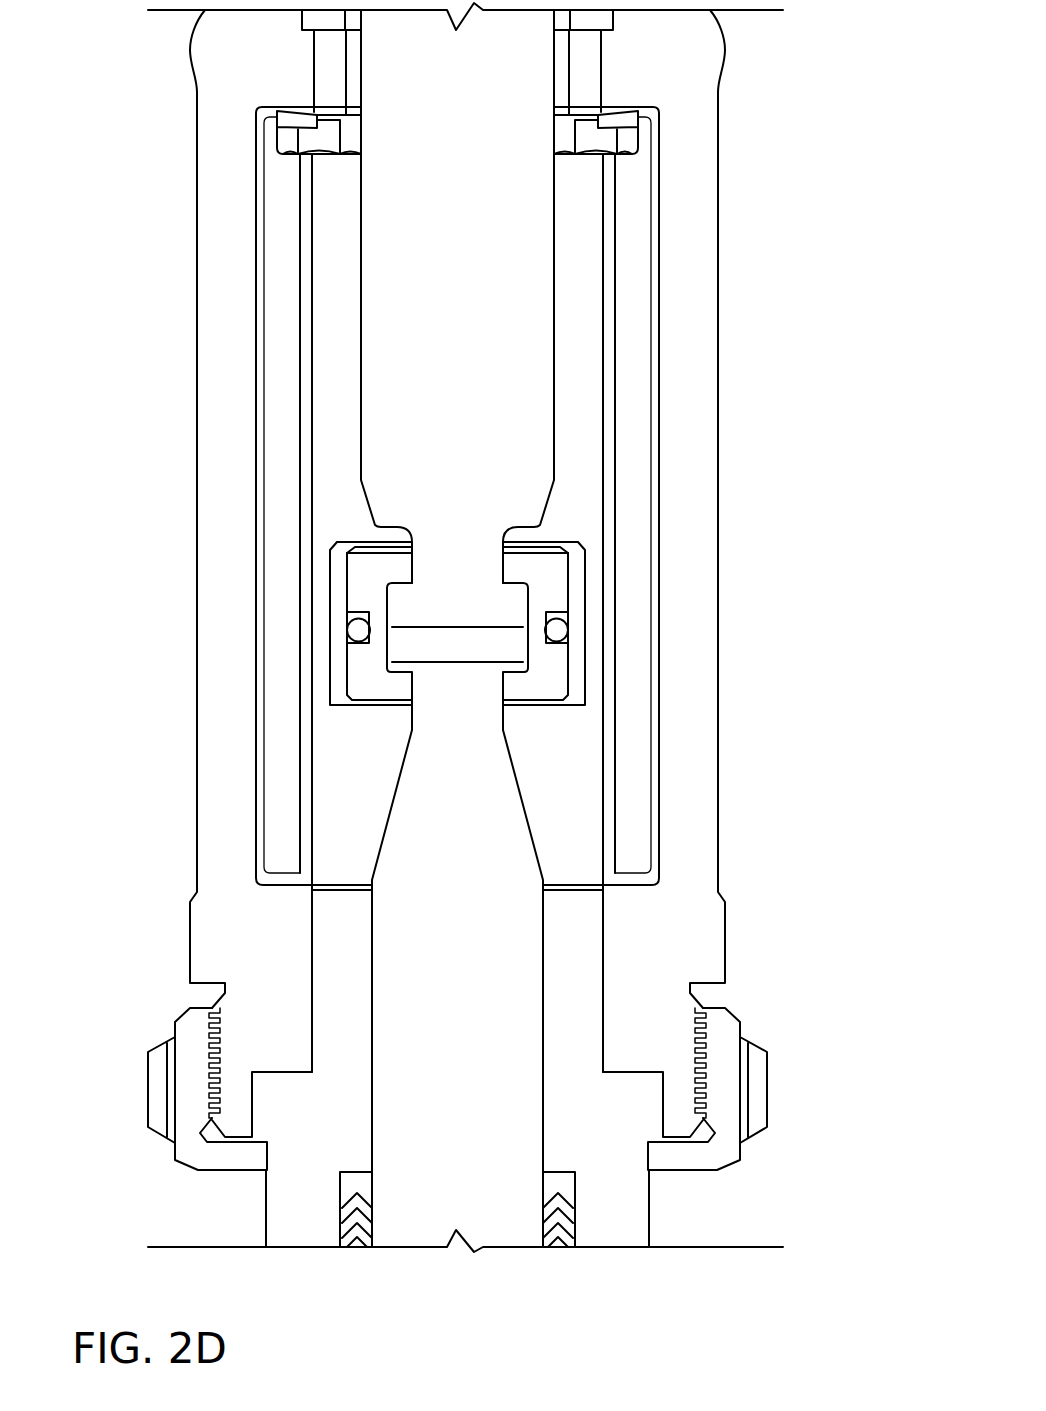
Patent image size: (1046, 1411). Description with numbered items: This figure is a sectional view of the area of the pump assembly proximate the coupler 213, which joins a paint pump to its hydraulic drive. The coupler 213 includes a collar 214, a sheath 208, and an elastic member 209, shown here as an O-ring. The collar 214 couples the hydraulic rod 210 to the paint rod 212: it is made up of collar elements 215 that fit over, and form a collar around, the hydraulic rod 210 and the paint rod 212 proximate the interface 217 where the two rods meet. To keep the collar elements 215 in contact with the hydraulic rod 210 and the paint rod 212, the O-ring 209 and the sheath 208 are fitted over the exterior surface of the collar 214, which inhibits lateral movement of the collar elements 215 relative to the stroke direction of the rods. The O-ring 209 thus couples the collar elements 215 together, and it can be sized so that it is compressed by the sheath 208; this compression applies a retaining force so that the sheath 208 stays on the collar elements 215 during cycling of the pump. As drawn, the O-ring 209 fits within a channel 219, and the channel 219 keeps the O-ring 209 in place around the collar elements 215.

The sheath 208 is at (573, 663).
The elastic member 209 is at (353, 631).
The hydraulic rod 210 is at (460, 296).
The paint rod 212 is at (471, 976).
The coupler 213 is at (604, 594).
The collar 214 is at (537, 590).
The collar elements 215 is at (738, 1025).
The interface 217 is at (452, 628).
The channel 219 is at (584, 617).